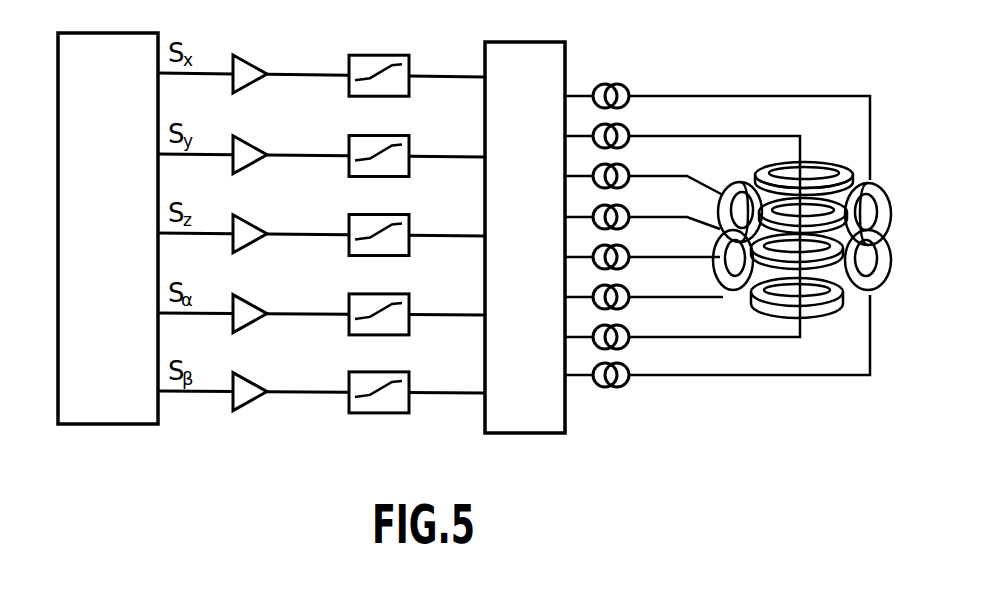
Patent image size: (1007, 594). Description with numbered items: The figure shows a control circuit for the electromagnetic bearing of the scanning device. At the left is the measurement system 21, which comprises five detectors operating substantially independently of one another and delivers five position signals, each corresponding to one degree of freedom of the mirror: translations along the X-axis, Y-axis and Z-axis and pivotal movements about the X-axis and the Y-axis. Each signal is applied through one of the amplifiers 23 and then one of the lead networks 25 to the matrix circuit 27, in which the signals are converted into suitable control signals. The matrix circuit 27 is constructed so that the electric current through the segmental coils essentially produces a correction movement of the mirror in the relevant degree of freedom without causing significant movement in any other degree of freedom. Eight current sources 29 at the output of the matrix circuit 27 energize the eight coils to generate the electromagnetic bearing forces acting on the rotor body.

The measurement system 21 is at (118, 47).
The amplifiers 23 is at (250, 70).
The lead networks 25 is at (360, 63).
The matrix circuit 27 is at (527, 60).
The current sources 29 is at (626, 86).